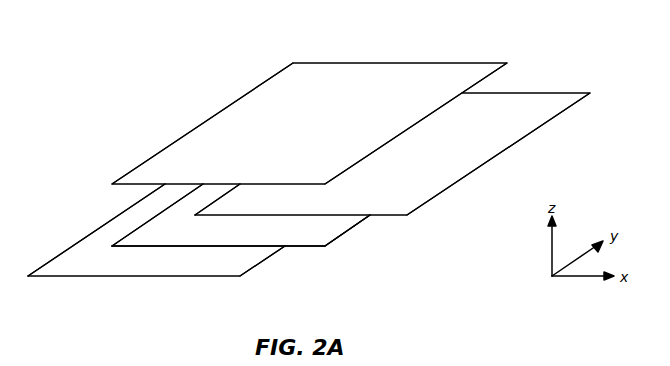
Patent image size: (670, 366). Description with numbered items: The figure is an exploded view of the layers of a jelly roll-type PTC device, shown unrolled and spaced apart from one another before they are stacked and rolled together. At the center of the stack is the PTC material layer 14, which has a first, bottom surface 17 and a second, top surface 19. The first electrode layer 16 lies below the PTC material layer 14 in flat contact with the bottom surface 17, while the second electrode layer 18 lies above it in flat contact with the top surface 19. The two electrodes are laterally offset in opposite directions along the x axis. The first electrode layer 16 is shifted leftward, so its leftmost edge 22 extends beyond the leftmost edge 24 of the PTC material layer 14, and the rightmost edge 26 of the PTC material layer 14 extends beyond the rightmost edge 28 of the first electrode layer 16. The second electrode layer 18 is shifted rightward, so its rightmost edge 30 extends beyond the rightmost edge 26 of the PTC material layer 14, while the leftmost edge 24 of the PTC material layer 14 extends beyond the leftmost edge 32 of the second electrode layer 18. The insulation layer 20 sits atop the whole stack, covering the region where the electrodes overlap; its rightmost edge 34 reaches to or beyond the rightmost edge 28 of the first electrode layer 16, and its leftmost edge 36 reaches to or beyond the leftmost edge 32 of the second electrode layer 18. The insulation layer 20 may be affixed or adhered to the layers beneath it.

The PTC material layer 14 is at (325, 246).
The first electrode layer 16 is at (93, 265).
The bottom surface 17 is at (310, 246).
The second electrode layer 18 is at (522, 106).
The top surface 19 is at (337, 225).
The insulation layer 20 is at (360, 78).
The leftmost edge of first electrode layer 22 is at (100, 227).
The leftmost edge of PTC material layer 24 is at (145, 222).
The rightmost edge of PTC material layer 26 is at (337, 237).
The rightmost edge of first electrode layer 28 is at (262, 263).
The rightmost edge of second electrode layer 30 is at (432, 200).
The leftmost edge of second electrode layer 32 is at (215, 200).
The rightmost edge of insulation layer 34 is at (390, 142).
The leftmost edge of insulation layer 36 is at (193, 128).